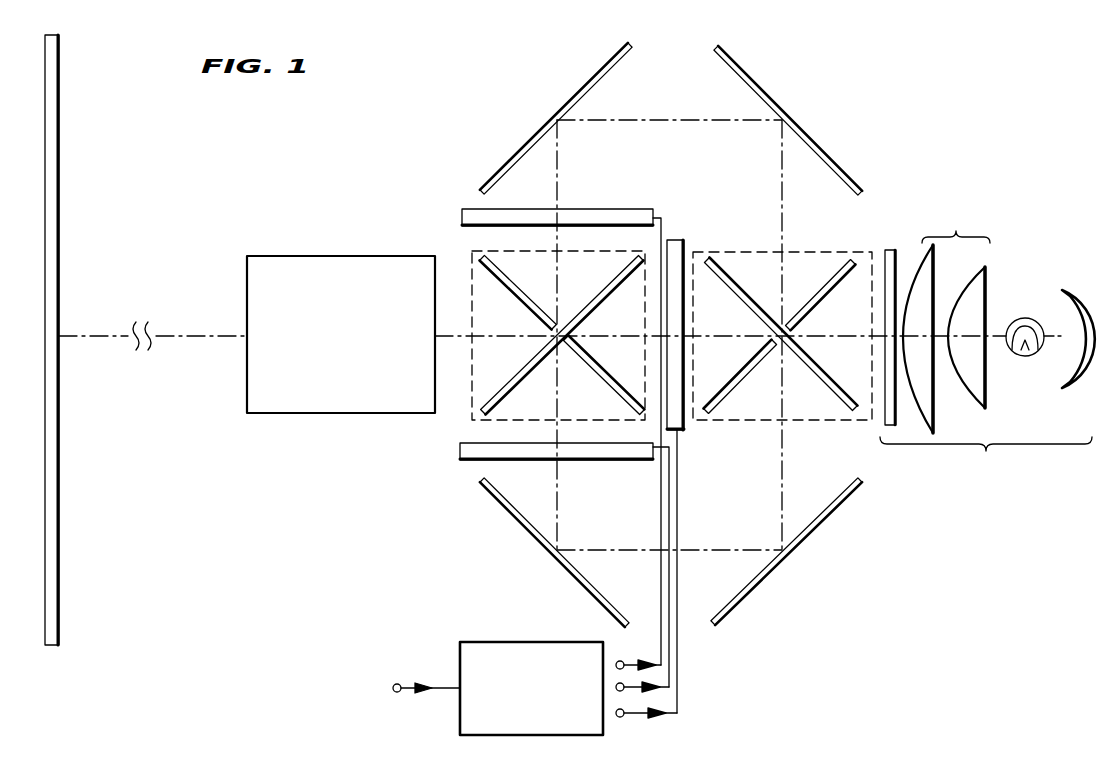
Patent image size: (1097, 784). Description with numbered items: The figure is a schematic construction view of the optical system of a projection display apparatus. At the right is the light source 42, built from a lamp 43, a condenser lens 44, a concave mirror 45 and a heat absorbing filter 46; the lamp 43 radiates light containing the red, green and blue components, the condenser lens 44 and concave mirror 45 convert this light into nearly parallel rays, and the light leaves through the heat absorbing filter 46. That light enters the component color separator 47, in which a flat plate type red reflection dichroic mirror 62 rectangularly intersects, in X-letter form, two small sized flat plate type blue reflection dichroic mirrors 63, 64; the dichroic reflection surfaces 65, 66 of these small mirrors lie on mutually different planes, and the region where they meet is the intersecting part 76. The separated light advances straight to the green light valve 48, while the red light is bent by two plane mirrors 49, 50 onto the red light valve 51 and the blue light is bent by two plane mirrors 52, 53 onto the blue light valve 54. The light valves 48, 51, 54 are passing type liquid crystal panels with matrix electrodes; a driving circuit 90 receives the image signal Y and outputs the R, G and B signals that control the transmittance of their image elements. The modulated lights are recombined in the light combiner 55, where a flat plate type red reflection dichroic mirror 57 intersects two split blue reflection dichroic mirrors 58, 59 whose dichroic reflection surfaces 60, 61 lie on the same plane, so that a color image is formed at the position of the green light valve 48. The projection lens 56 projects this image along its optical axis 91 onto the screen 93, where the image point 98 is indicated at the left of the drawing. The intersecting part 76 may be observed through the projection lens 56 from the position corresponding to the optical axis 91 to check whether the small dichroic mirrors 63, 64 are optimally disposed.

The light source 42 is at (987, 341).
The lamp 43 is at (1017, 322).
The condenser lens 44 is at (946, 316).
The concave mirror 45 is at (1066, 290).
The heat absorbing filter 46 is at (892, 250).
The component color separator 47 is at (746, 252).
The green light valve 48 is at (680, 240).
The plane mirror 49 is at (790, 117).
The plane mirror 50 is at (545, 113).
The red light valve 51 is at (462, 218).
The plane mirror 52 is at (748, 595).
The plane mirror 53 is at (585, 591).
The blue light valve 54 is at (460, 452).
The light combiner 55 is at (590, 252).
The projection lens 56 is at (336, 256).
The red reflection dichroic mirror 57 is at (522, 380).
The blue reflection dichroic mirror 58 is at (595, 365).
The blue reflection dichroic mirror 59 is at (505, 286).
The dichroic reflection surface 60 is at (602, 384).
The dichroic reflection surface 61 is at (499, 293).
The red reflection dichroic mirror 62 is at (733, 295).
The small sized blue reflection dichroic mirror 63 is at (826, 286).
The small sized blue reflection dichroic mirror 64 is at (735, 389).
The dichroic reflection surface 65 is at (828, 298).
The dichroic reflection surface 66 is at (745, 381).
The intersecting part 76 is at (792, 338).
The driving circuit 90 is at (490, 642).
The optical axis 91 is at (464, 334).
The screen 93 is at (55, 140).
The image point on screen 98 is at (60, 336).